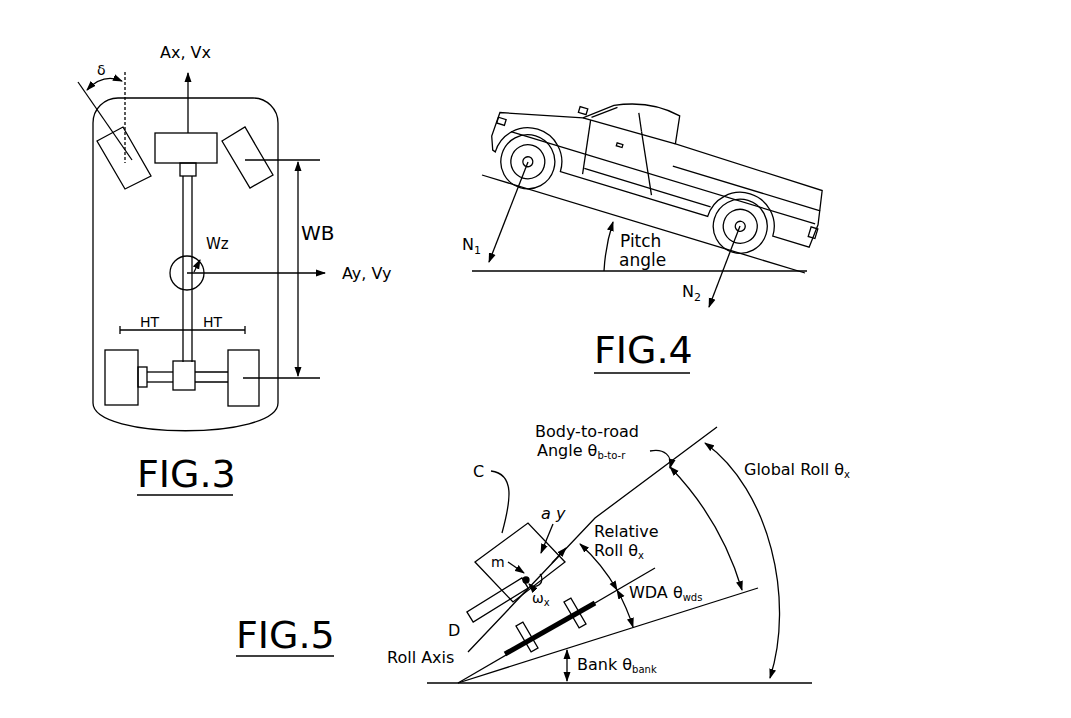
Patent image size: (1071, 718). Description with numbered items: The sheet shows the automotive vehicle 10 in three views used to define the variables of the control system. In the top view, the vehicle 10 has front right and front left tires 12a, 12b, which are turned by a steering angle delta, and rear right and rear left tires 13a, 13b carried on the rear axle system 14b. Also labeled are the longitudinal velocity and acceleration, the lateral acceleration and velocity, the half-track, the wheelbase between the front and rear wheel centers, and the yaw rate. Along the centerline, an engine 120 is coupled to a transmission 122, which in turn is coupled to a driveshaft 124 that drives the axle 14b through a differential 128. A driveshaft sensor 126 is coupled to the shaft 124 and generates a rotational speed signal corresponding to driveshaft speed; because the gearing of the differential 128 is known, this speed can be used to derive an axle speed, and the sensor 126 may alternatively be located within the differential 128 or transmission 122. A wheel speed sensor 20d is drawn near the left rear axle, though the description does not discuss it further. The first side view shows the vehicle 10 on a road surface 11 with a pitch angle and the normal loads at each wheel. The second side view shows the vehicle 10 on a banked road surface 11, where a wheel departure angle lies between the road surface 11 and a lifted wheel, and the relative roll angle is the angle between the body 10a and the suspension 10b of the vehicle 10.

In FIG. 3, the automotive vehicle 10 is at (278, 137).
In FIG. 4, the automotive vehicle 10 is at (653, 121).
In FIG. 5, the automotive vehicle 10 is at (436, 573).
In FIG. 5, the body 10a is at (480, 556).
In FIG. 5, the suspension 10b is at (565, 604).
In FIG. 4, the road surface 11 is at (770, 259).
In FIG. 5, the road surface 11 is at (670, 617).
In FIG. 3, the front right tire 12a is at (247, 128).
In FIG. 3, the front left tire 12b is at (113, 167).
In FIG. 3, the rear right tire 13a is at (254, 402).
In FIG. 3, the rear left tire 13b is at (112, 401).
In FIG. 3, the rear axle system 14b is at (214, 383).
In FIG. 3, the wheel speed sensor 20d is at (158, 384).
In FIG. 3, the engine 120 is at (208, 133).
In FIG. 3, the transmission 122 is at (181, 172).
In FIG. 3, the driveshaft 124 is at (186, 306).
In FIG. 3, the driveshaft sensor 126 is at (188, 360).
In FIG. 3, the differential 128 is at (186, 391).